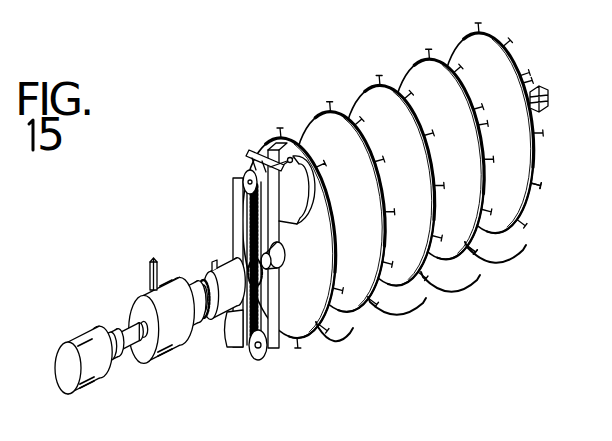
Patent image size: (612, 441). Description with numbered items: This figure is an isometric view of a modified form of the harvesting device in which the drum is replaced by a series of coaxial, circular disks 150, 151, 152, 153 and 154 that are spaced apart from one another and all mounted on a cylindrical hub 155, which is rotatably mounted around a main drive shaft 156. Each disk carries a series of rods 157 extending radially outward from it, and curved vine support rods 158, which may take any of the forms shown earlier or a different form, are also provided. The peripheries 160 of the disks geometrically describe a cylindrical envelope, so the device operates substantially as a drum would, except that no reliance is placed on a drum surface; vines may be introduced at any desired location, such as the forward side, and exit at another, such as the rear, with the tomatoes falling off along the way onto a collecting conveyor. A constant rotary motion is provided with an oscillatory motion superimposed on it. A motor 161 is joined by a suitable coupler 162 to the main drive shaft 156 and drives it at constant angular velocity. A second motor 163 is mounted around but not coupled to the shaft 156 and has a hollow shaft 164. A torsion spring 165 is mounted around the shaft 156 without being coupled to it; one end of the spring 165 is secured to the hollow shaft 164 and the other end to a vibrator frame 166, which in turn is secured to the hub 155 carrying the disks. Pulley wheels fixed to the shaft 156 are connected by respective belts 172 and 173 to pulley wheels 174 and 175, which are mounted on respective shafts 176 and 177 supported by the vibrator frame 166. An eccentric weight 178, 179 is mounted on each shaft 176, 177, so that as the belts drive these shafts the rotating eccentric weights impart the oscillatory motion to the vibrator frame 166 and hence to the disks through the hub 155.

The circular disk 150 is at (304, 334).
The circular disk 151 is at (310, 133).
The circular disk 152 is at (375, 106).
The circular disk 153 is at (424, 76).
The circular disk 154 is at (493, 56).
The cylindrical hub 155 is at (547, 101).
The main drive shaft 156 is at (130, 345).
The rods 157 is at (505, 226).
The curved vine support rods 158 is at (474, 284).
The peripheries of the disks 160 is at (325, 168).
The motor 161 is at (78, 336).
The coupler 162 is at (108, 335).
The second motor 163 is at (148, 292).
The hollow shaft 164 is at (188, 290).
The torsion spring 165 is at (201, 280).
The vibrator frame 166 is at (232, 268).
The belt 172 is at (246, 205).
The belt 173 is at (263, 353).
The pulley wheel 174 is at (243, 168).
The pulley wheel 175 is at (247, 355).
The shaft 176 is at (251, 156).
The shaft 177 is at (300, 318).
The eccentric weight 178 is at (292, 214).
The eccentric weight 179 is at (230, 328).